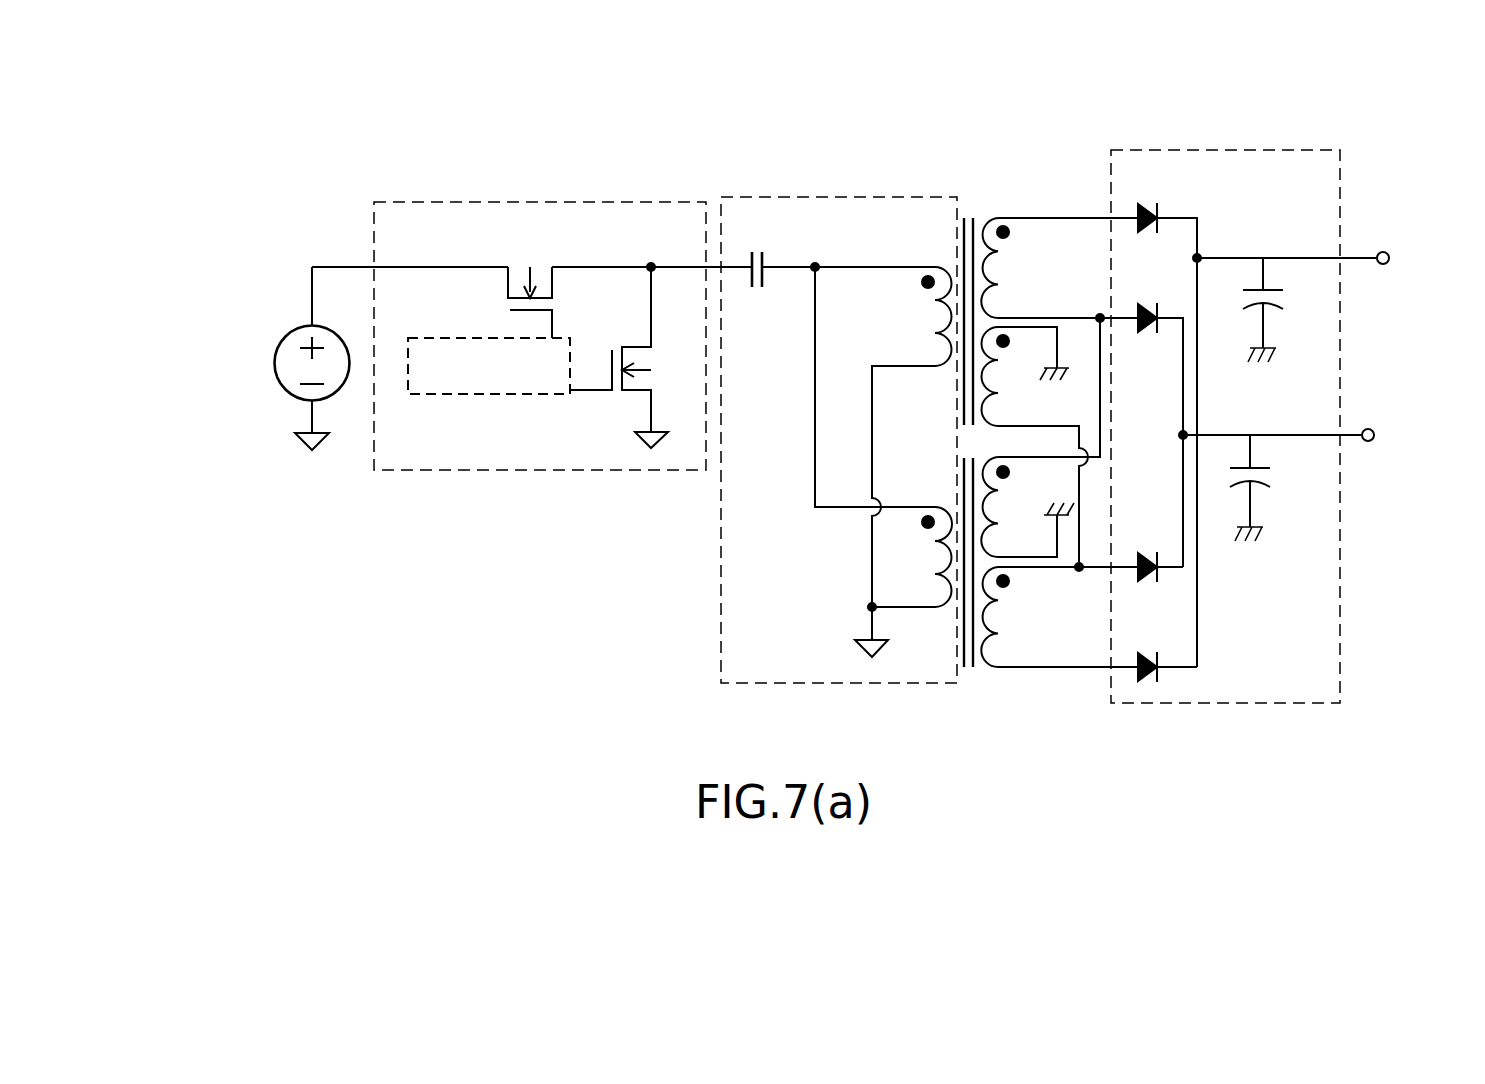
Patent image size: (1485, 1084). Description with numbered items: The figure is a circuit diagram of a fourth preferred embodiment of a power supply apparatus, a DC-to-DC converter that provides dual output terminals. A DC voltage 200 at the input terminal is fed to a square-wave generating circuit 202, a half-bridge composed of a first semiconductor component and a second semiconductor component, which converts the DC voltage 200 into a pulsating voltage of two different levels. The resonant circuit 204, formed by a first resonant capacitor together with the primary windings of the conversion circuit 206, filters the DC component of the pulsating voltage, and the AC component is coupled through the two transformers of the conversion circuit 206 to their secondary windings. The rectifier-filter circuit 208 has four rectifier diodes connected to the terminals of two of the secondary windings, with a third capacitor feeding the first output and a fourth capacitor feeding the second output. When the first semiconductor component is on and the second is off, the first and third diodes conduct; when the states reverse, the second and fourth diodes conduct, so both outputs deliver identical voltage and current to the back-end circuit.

The DC voltage 200 is at (284, 363).
The square-wave generating circuit 202 is at (504, 202).
The resonant circuit 204 is at (807, 197).
The conversion circuit 206 is at (998, 179).
The rectifier-filter circuit 208 is at (1220, 150).